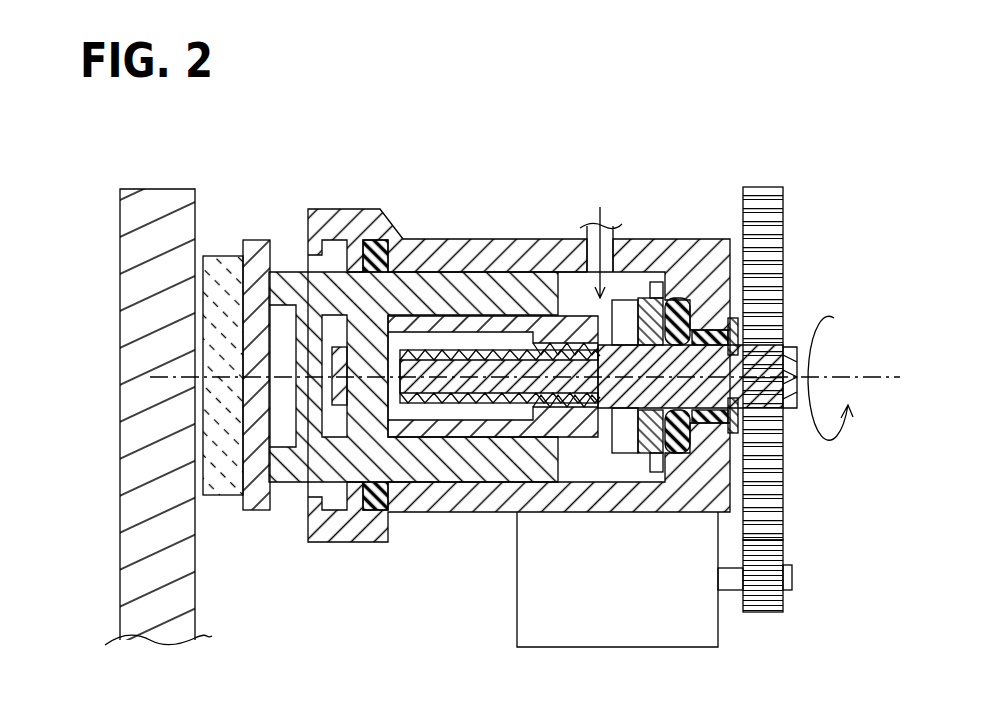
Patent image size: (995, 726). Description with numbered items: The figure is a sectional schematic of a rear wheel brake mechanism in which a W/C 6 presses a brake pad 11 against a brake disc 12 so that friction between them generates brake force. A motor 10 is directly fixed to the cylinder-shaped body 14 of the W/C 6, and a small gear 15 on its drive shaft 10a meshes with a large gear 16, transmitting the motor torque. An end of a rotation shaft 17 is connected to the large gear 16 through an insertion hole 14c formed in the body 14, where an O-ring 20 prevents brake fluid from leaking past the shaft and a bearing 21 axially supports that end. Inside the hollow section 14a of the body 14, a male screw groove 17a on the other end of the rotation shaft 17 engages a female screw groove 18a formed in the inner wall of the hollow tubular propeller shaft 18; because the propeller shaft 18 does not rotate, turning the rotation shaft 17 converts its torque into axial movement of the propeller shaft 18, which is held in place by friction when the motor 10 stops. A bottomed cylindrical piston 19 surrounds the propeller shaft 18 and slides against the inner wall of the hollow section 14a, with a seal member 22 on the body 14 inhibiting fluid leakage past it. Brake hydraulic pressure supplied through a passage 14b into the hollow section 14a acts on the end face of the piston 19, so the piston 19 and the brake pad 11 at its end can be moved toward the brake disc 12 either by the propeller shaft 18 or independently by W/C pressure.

The W/C 6 is at (571, 425).
The motor 10 is at (590, 648).
The drive shaft 10a is at (732, 590).
The brake pad 11 is at (220, 497).
The brake disc 12 is at (120, 468).
The body 14 is at (530, 239).
The hollow section 14a is at (578, 283).
The passage 14b is at (622, 233).
The insertion hole 14c is at (740, 334).
The small gear 15 is at (785, 600).
The large gear 16 is at (785, 228).
The rotation shaft 17 is at (742, 364).
The male screw groove 17a is at (502, 400).
The propeller shaft 18 is at (447, 430).
The female screw groove 18a is at (575, 408).
The piston 19 is at (400, 462).
The O-ring 20 is at (677, 455).
The bearing 21 is at (700, 425).
The seal member 22 is at (375, 510).